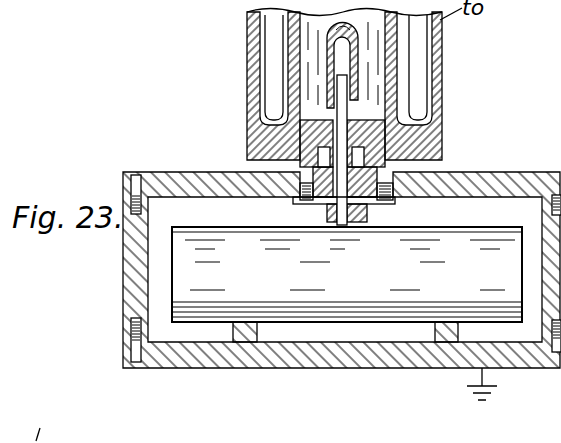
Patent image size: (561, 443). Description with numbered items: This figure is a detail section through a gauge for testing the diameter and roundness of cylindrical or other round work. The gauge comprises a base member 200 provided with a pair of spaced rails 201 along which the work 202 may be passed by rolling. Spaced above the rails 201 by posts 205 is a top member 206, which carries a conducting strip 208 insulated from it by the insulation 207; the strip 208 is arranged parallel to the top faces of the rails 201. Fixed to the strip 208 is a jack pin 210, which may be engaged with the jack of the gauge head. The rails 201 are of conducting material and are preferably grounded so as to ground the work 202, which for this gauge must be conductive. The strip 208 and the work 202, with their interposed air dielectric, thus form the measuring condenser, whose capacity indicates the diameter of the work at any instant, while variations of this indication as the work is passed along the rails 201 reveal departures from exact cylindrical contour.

The base member 200 is at (327, 368).
The rails 201 is at (250, 331).
The work 202 is at (185, 249).
The posts 205 is at (124, 312).
The top member 206 is at (475, 169).
The insulation 207 is at (395, 204).
The conducting strip 208 is at (300, 198).
The jack pin 210 is at (345, 103).